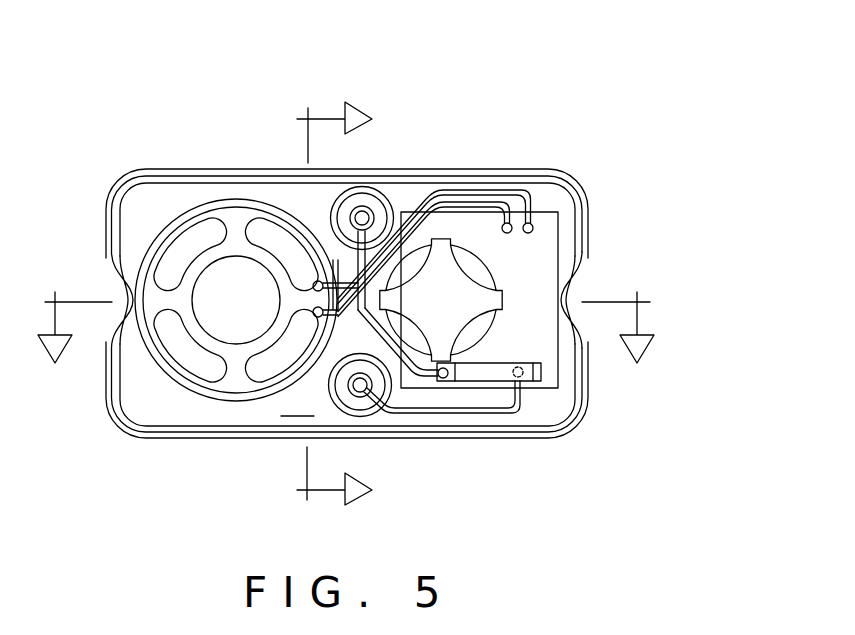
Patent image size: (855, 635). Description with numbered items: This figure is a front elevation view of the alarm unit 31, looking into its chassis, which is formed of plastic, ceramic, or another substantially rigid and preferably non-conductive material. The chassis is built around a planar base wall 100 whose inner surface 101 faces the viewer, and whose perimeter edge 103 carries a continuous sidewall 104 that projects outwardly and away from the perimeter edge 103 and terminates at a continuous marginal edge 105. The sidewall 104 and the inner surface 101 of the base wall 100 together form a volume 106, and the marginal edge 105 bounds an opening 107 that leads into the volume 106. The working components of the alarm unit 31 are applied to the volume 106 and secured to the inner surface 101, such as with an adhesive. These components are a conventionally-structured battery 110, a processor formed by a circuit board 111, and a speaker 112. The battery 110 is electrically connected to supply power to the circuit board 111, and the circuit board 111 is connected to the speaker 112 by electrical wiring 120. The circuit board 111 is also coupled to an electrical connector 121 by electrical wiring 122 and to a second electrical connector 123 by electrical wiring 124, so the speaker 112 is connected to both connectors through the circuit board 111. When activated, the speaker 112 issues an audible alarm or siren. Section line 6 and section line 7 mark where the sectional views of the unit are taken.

The base wall 100 is at (176, 188).
The inner surface 101 is at (181, 414).
The perimeter edge 103 is at (558, 175).
The continuous sidewall 104 is at (587, 226).
The marginal edge 105 is at (453, 192).
The volume 106 is at (319, 339).
The opening 107 is at (147, 389).
The battery 110 is at (492, 277).
The circuit board 111 is at (549, 363).
The speaker 112 is at (228, 208).
The electrical wiring 120 is at (433, 188).
The electrical connector 121 is at (370, 190).
The electrical wiring 122 is at (437, 376).
The electrical connector 123 is at (366, 396).
The electrical wiring 124 is at (480, 414).
The alarm unit 31 is at (549, 166).
The section line 6- 6 is at (346, 305).
The section line 7- 7 is at (320, 305).